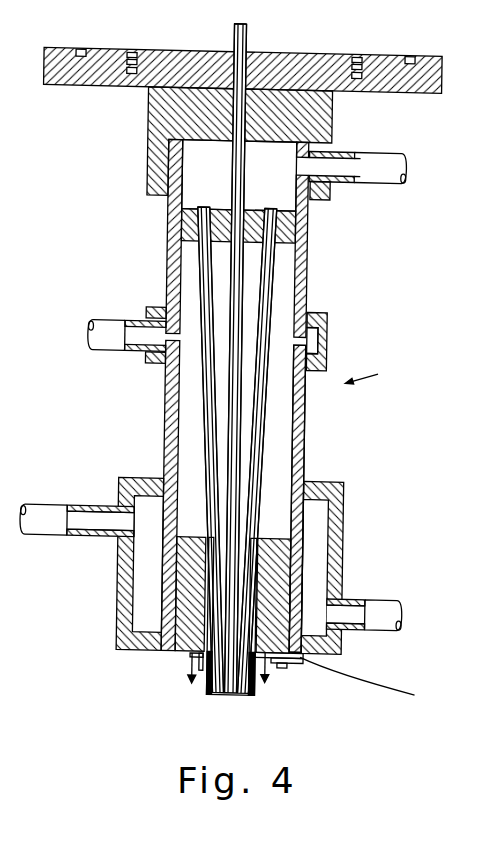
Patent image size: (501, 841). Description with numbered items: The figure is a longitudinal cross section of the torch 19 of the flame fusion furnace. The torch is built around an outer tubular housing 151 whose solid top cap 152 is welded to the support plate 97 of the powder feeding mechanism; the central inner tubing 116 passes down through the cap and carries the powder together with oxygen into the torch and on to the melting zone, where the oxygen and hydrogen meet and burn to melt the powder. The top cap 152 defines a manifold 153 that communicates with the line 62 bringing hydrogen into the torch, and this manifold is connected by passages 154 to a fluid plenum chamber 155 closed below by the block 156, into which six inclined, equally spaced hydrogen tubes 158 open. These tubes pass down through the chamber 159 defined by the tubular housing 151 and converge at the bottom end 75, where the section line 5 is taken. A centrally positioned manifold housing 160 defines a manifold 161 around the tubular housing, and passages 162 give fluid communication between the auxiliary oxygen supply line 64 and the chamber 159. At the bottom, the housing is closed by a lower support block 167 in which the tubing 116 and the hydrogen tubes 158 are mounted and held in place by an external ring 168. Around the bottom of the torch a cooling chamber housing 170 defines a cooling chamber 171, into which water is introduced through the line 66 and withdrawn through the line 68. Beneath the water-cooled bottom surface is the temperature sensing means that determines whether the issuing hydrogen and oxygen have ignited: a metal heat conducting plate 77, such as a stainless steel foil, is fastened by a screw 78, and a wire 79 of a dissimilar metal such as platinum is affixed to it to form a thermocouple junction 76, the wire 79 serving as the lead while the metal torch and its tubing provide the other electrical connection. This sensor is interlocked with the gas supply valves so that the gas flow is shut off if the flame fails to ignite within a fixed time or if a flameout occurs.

The mounting plate 97 is at (443, 66).
The central inner tubing 116 is at (247, 37).
The top cap 152 is at (316, 111).
The passages 154 is at (338, 145).
The line 62 is at (390, 155).
The manifold 153 is at (332, 188).
The fluid plenum chamber 155 is at (215, 191).
The seal block 156 is at (191, 236).
The outer tubular housing 151 is at (313, 241).
The inclined hydrogen tubes 158 is at (273, 271).
The manifold housing 160 is at (329, 314).
The manifold 161 is at (311, 341).
The torch 19 is at (374, 373).
The chamber 159 is at (310, 409).
The auxiliary oxygen supply line 64 is at (117, 346).
The passages 162 is at (164, 365).
The cooling chamber housing 170 is at (337, 491).
The lower support block 167 is at (287, 541).
The cooling chamber 171 is at (326, 566).
The line 68 is at (59, 531).
The line 66 is at (396, 605).
The external ring 168 is at (202, 658).
The section line 5 is at (228, 679).
The bottom end 75 is at (250, 703).
The screw 78 is at (291, 669).
The thermocouple junction 76 is at (304, 661).
The heat conducting plate 77 is at (309, 659).
The wire 79 is at (357, 687).